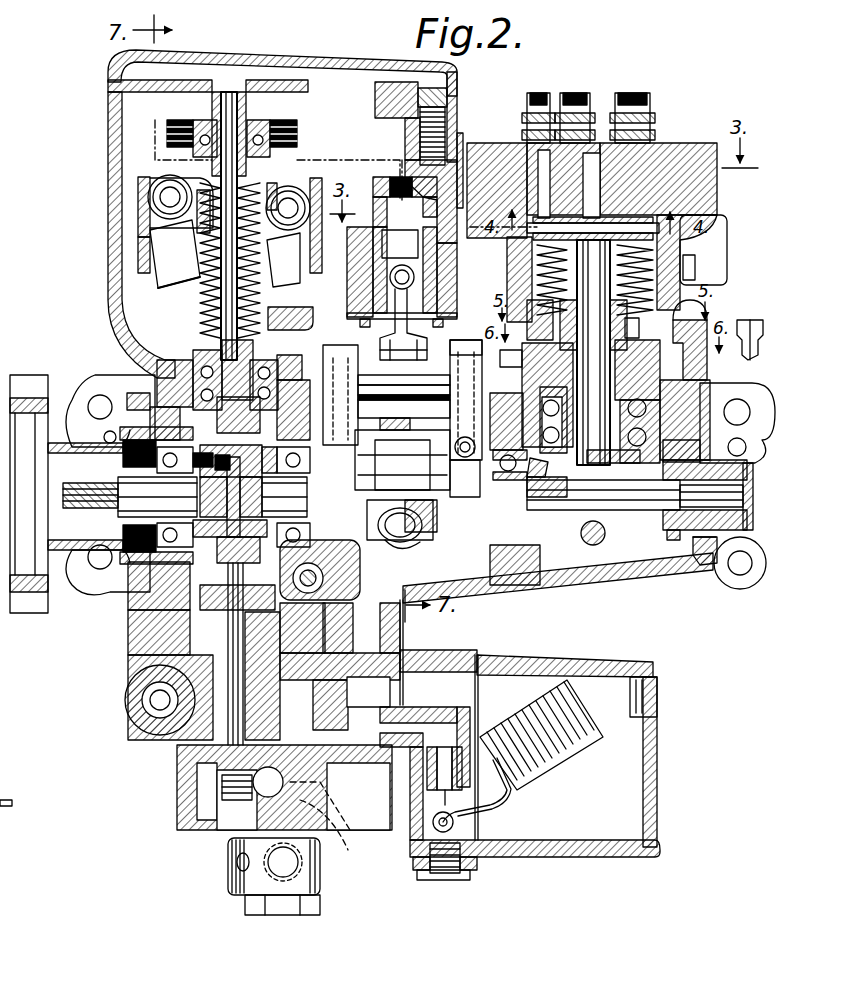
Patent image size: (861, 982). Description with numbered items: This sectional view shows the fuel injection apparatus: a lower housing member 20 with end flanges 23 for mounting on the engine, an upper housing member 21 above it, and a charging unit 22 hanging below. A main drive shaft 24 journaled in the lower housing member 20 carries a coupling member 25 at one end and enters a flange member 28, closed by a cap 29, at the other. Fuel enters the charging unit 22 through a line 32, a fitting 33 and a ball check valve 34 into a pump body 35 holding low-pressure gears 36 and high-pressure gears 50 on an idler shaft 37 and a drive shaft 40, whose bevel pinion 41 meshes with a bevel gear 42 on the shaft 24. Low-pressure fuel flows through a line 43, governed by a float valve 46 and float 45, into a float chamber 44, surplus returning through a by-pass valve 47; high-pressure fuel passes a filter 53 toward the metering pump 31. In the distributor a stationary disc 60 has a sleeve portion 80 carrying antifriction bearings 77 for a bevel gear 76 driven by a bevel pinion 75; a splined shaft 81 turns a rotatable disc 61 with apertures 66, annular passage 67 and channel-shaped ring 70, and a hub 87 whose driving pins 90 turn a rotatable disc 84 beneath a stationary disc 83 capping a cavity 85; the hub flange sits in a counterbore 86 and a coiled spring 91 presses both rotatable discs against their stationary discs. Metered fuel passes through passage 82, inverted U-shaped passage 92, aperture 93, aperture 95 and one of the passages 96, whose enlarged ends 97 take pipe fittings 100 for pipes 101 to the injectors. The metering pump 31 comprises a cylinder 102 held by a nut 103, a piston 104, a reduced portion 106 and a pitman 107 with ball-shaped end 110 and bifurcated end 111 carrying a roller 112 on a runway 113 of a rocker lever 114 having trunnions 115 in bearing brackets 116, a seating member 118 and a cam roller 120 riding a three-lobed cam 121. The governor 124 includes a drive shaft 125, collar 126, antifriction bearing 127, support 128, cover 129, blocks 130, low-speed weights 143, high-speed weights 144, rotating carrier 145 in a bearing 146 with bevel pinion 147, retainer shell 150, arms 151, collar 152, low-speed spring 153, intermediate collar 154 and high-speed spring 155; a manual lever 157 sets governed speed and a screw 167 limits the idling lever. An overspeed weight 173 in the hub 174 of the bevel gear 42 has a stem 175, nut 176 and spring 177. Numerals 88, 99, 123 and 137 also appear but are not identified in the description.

The lower housing member 20 is at (615, 580).
The upper housing member 21 is at (108, 172).
The charging unit 22 is at (172, 790).
The flanges 23 is at (80, 392).
The main drive shaft 24 is at (330, 520).
The coupling member 25 is at (32, 613).
The flange member 28 is at (700, 578).
The cap 29 is at (742, 510).
The metering pump 31 is at (380, 174).
The line 32 is at (283, 878).
The fitting 33 is at (320, 872).
The check valve 34 is at (348, 850).
The pump body 35 is at (150, 735).
The gears 36 is at (285, 775).
The idler shaft 37 is at (250, 700).
The drive shaft 40 is at (230, 628).
The bevel pinion 41 is at (170, 612).
The bevel gear 42 is at (392, 428).
The line 43 is at (358, 796).
The float chamber 44 is at (580, 857).
The float 45 is at (563, 745).
The float valve 46 is at (480, 735).
The by-pass valve 47 is at (250, 805).
The gears 50 is at (170, 665).
The filter 53 is at (325, 578).
The stationary disc 60 is at (707, 378).
The rotatable disc 61 is at (650, 324).
The apertures 66 is at (552, 400).
The annular passage 67 is at (635, 280).
The channel-shaped ring 70 is at (522, 352).
The bevel pinion 75 is at (565, 515).
The bevel gear 76 is at (600, 470).
The antifriction bearings 77 is at (660, 420).
The sleeve portion 80 is at (660, 440).
The spline shaft 81 is at (618, 545).
The passage 82 is at (462, 150).
The stationary disc 83 is at (690, 145).
The rotatable disc 84 is at (612, 214).
The cavity 85 is at (655, 178).
The counterbore 86 is at (681, 252).
The hub 87 is at (522, 280).
The arm 88 is at (684, 266).
The driving pins 90 is at (527, 248).
The coiled spring 91 is at (527, 300).
The inverted U-shaped passage 92 is at (598, 150).
The aperture 93 is at (612, 180).
The aperture 95 is at (497, 190).
The vertically extending passages 96 is at (605, 95).
The eccentrically enlarged upper ends 97 is at (520, 146).
The port 99 is at (238, 868).
The pipe fitting 100 is at (527, 118).
The pipes 101 is at (556, 95).
The cylinder 102 is at (360, 243).
The nut 103 is at (362, 325).
The piston 104 is at (375, 255).
The reduced portion 106 is at (388, 183).
The pitman 107 is at (440, 300).
The ball-shaped upper end 110 is at (390, 275).
The bifurcated lower end 111 is at (412, 348).
The roller 112 is at (372, 393).
The runway 113 is at (380, 402).
The bifurcated rocker lever 114 is at (467, 478).
The trunnion 115 is at (330, 370).
The bearing bracket 116 is at (328, 351).
The seating member 118 is at (415, 550).
The cam roller 120 is at (366, 485).
The cam 121 is at (422, 528).
The sleeve 123 is at (366, 388).
The governor 124 is at (165, 285).
The governor drive shaft 125 is at (200, 300).
The collar 126 is at (282, 153).
The antifriction bearing 127 is at (255, 128).
The support 128 is at (108, 84).
The cover 129 is at (362, 60).
The blocks 130 is at (178, 122).
The bar 137 is at (456, 345).
The low-speed governor weights 143 is at (138, 247).
The high-speed governor weights 144 is at (287, 260).
The rotating carrier 145 is at (290, 307).
The antifriction bearing 146 is at (157, 368).
The bevel pinion 147 is at (157, 395).
The retainer shell 150 is at (138, 205).
The inwardly extending arms 151 is at (218, 175).
The collar 152 is at (175, 185).
The low-speed governor spring 153 is at (197, 212).
The intermediate collar 154 is at (175, 254).
The high-speed governor spring 155 is at (221, 340).
The manually operable lever 157 is at (752, 328).
The screw 167 is at (466, 437).
The weight 173 is at (205, 565).
The hub 174 is at (200, 501).
The stem 175 is at (312, 506).
The nut 176 is at (312, 490).
The spring 177 is at (200, 486).